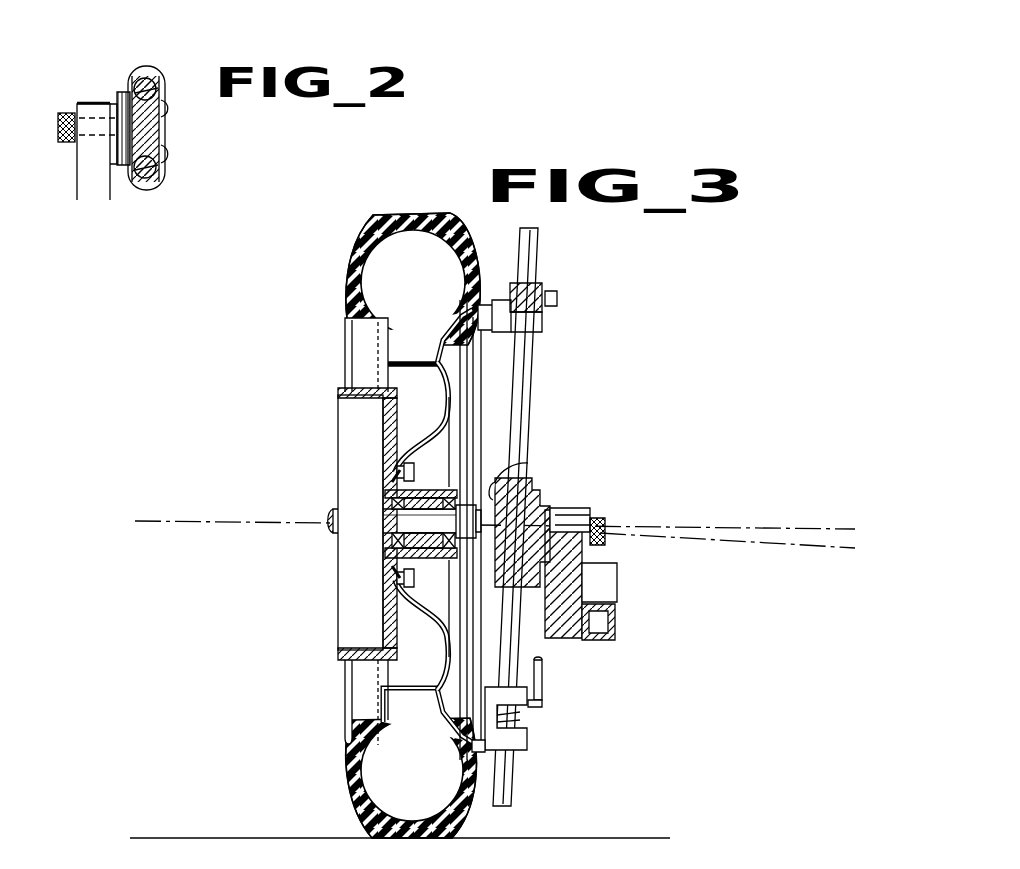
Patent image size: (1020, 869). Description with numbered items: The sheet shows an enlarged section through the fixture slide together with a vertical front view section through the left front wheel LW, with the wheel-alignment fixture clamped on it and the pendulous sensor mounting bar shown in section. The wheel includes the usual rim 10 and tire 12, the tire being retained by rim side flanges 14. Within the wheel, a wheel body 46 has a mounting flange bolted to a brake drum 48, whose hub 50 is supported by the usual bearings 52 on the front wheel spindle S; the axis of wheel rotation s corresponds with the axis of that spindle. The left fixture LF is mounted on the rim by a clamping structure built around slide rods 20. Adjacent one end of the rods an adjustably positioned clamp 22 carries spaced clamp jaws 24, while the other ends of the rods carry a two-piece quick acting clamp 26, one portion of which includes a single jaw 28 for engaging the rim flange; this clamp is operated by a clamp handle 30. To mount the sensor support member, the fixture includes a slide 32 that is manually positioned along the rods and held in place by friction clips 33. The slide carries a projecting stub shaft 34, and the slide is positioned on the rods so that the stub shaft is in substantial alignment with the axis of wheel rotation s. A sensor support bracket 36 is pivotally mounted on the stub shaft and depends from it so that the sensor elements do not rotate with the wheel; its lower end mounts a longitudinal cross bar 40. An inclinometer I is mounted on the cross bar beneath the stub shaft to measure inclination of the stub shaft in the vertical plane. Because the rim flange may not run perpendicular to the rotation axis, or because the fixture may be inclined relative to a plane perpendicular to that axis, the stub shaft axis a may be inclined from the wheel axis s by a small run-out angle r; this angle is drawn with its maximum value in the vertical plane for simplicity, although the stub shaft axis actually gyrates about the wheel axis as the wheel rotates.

In FIG. 3, the rim 10 is at (382, 351).
In FIG. 3, the tire 12 is at (358, 293).
In FIG. 3, the rim side flanges 14 is at (466, 316).
In FIG. 2, the slide rods 20 is at (142, 75).
In FIG. 3, the slide rods 20 is at (528, 378).
In FIG. 3, the clamp 22 is at (542, 290).
In FIG. 3, the clamp jaws 24 is at (482, 302).
In FIG. 3, the quick acting clamp 26 is at (522, 716).
In FIG. 3, the single jaw 28 is at (470, 755).
In FIG. 3, the clamp handle 30 is at (542, 688).
In FIG. 2, the slide 32 is at (168, 131).
In FIG. 3, the slide 32 is at (543, 489).
In FIG. 2, the friction clips 33 is at (163, 92).
In FIG. 3, the friction clips 33 is at (528, 458).
In FIG. 2, the stub shaft 34 is at (80, 140).
In FIG. 3, the stub shaft 34 is at (568, 510).
In FIG. 2, the sensor support bracket 36 is at (77, 185).
In FIG. 3, the sensor support bracket 36 is at (606, 518).
In FIG. 3, the cross bar 40 is at (617, 623).
In FIG. 3, the wheel body 46 is at (413, 446).
In FIG. 3, the brake drum 48 is at (343, 593).
In FIG. 3, the hub 50 is at (432, 560).
In FIG. 3, the bearings 52 is at (416, 495).
In FIG. 3, the left front wheel LW is at (350, 263).
In FIG. 3, the left fixture LF is at (533, 356).
In FIG. 3, the wheel spindle S is at (705, 528).
In FIG. 3, the axis of wheel rotation s is at (213, 521).
In FIG. 3, the stub shaft axis a is at (705, 528).
In FIG. 3, the run-out angle r is at (810, 565).
In FIG. 3, the inclinometer I is at (620, 571).